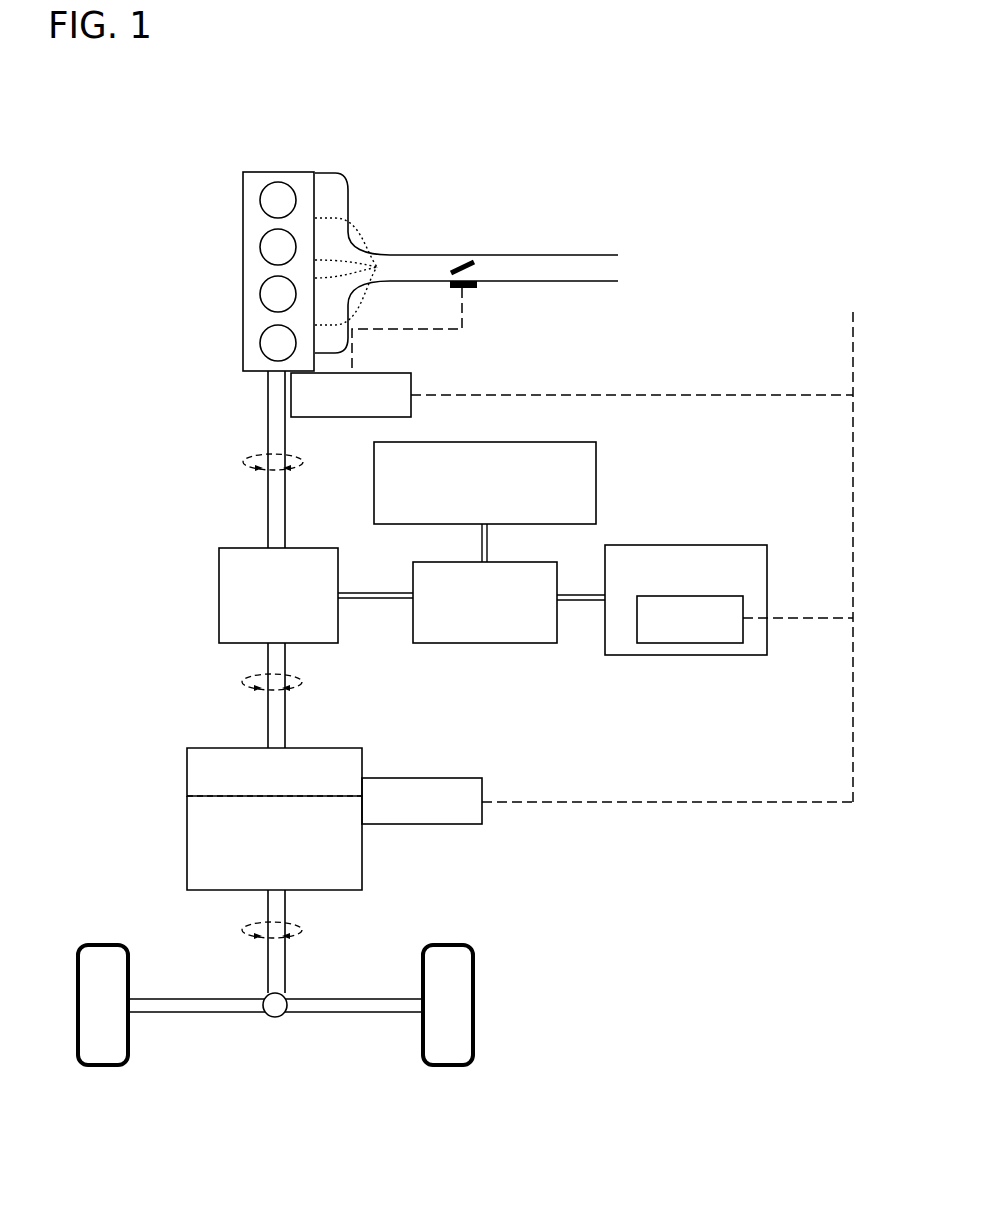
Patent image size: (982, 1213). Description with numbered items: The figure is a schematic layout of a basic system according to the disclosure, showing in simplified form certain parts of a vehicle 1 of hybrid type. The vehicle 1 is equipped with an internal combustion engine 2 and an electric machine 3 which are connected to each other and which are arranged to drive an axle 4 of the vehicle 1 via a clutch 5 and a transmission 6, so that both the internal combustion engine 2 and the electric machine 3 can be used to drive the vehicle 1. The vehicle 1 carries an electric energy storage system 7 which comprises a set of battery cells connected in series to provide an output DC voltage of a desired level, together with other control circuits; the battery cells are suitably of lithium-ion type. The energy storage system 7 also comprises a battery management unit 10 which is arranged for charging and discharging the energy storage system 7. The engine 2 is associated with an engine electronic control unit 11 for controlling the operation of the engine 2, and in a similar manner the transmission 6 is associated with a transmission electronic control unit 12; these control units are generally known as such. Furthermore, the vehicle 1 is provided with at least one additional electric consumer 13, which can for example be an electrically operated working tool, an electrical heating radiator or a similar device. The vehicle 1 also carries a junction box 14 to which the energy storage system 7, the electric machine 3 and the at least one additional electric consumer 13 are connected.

The vehicle 1 is at (673, 935).
The internal combustion engine 2 is at (248, 352).
The electric machine 3 is at (219, 608).
The axle 4 is at (225, 1007).
The clutch 5 is at (187, 772).
The transmission 6 is at (187, 877).
The electric energy storage system 7 is at (652, 656).
The battery management unit 10 is at (718, 637).
The engine electronic control unit 11 is at (413, 391).
The transmission electronic control unit 12 is at (465, 817).
The additional electric consumer 13 is at (596, 505).
The junction box 14 is at (442, 625).